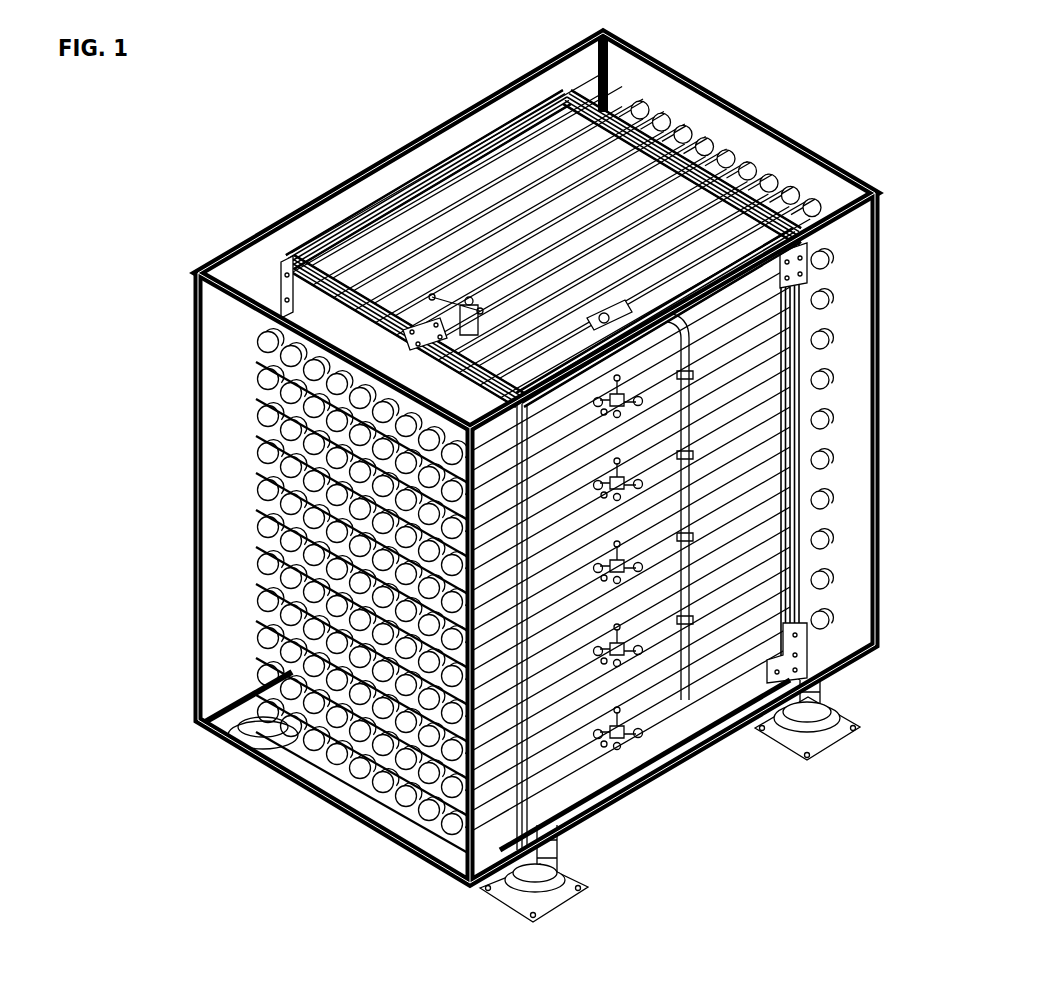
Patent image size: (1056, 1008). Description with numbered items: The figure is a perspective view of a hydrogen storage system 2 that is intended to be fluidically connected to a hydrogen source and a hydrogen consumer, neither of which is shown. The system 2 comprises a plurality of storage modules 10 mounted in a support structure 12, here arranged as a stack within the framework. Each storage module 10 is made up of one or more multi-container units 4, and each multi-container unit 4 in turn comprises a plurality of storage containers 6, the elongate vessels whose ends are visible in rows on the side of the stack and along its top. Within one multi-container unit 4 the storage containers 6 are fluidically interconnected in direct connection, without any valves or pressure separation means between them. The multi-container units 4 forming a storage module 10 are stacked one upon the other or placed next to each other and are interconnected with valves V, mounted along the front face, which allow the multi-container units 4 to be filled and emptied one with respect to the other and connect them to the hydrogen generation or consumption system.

The hydrogen storage system 2 is at (935, 60).
The multi-container unit 4 is at (245, 405).
The storage container 6 is at (500, 270).
The storage module 10 is at (256, 483).
The support structure 12 is at (805, 456).
The valve V is at (630, 394).